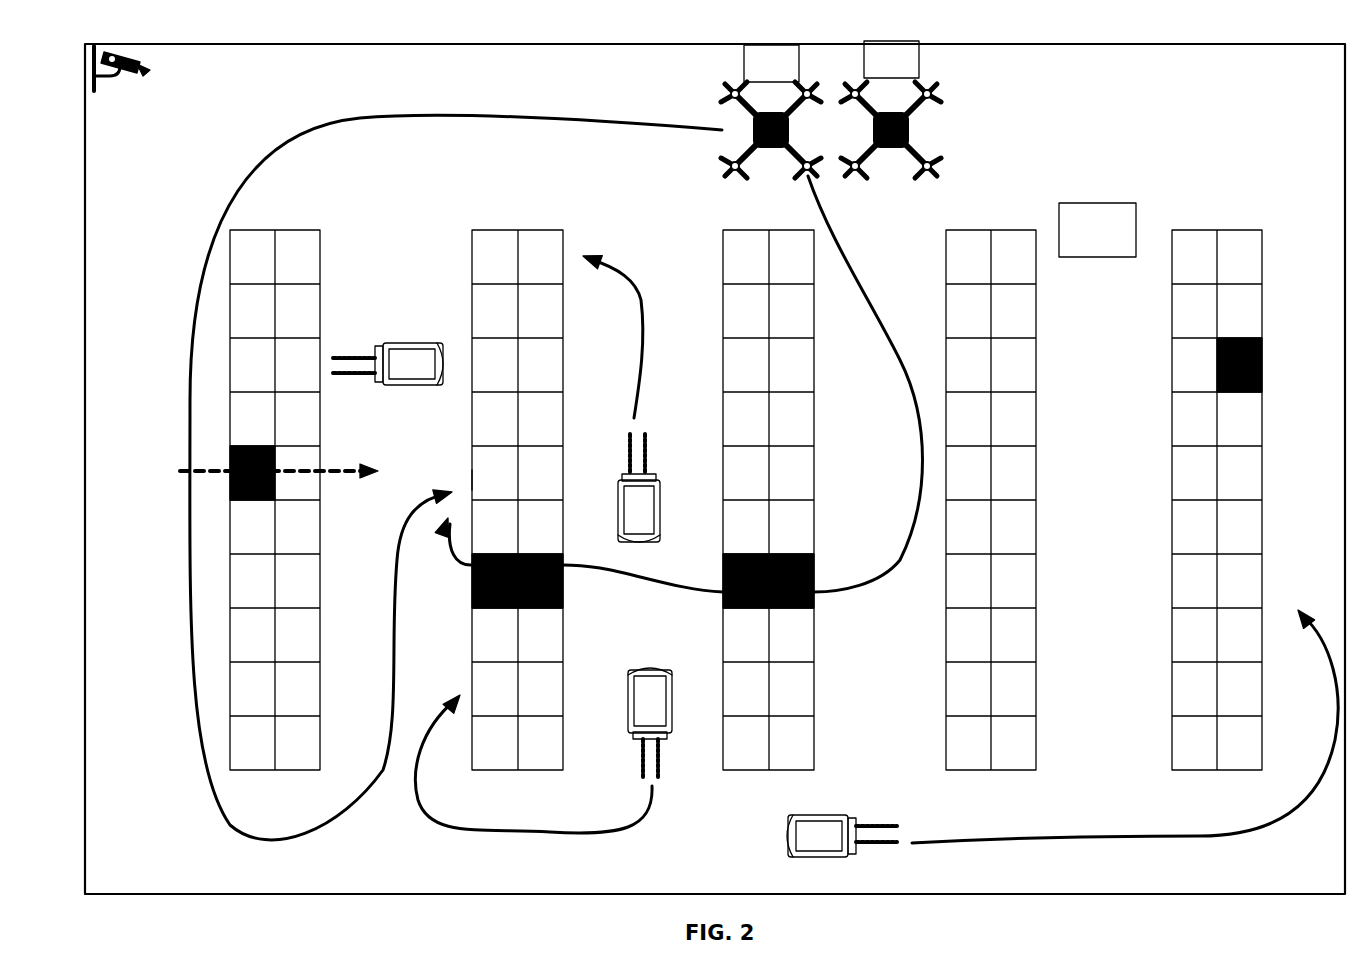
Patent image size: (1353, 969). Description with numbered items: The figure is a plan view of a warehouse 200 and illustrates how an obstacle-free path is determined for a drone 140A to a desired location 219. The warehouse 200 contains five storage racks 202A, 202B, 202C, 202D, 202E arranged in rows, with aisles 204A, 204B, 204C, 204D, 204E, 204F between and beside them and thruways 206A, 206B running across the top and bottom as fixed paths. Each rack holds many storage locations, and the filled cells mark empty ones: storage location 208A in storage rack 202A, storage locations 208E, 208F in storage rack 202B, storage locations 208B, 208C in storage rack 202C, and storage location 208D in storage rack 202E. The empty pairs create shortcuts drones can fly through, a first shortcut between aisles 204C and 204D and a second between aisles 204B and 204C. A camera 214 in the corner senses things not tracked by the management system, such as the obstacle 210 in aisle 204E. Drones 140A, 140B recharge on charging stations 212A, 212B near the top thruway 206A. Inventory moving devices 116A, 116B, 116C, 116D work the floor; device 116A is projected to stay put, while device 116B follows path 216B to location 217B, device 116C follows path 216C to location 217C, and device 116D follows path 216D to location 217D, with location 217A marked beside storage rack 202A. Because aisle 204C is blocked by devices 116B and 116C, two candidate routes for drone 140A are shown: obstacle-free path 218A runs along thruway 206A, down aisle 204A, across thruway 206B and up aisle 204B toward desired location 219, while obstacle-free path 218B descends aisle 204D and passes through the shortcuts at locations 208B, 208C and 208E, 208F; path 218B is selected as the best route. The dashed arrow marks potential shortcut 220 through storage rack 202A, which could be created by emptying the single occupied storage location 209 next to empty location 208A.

The warehouse 200 is at (1256, 47).
The camera 214 is at (117, 87).
The storage rack 202A is at (270, 231).
The storage rack 202B is at (513, 231).
The storage rack 202C is at (764, 231).
The storage rack 202D is at (986, 231).
The storage rack 202E is at (1213, 231).
The aisle 204A is at (180, 500).
The aisle 204B is at (396, 499).
The aisle 204C is at (643, 500).
The aisle 204D is at (880, 500).
The aisle 204E is at (1104, 500).
The aisle 204F is at (1302, 500).
The thruway 206A is at (745, 153).
The thruway 206B is at (745, 821).
The storage location 208A is at (230, 492).
The storage location 208B is at (723, 572).
The storage location 208C is at (814, 578).
The storage location 208D is at (1262, 360).
The storage location 208E is at (472, 596).
The storage location 208F is at (563, 597).
The storage location 209 is at (316, 478).
The obstacle 210 is at (1097, 203).
The charging station 212A is at (744, 62).
The charging station 212B is at (919, 58).
The drone 140A is at (738, 132).
The drone 140B is at (905, 129).
The inventory moving device 116A is at (410, 342).
The inventory moving device 116B is at (620, 480).
The inventory moving device 116C is at (640, 670).
The inventory moving device 116D is at (836, 815).
The path 216B is at (647, 310).
The path 216C is at (533, 775).
The path 216D is at (1125, 738).
The location 217A is at (336, 266).
The location 217B is at (565, 245).
The location 217C is at (470, 692).
The location 217D is at (1262, 592).
The obstacle-free path 218A is at (435, 122).
The obstacle-free path 218B is at (894, 336).
The desired location 219 is at (470, 479).
The potential shortcut 220 is at (279, 453).